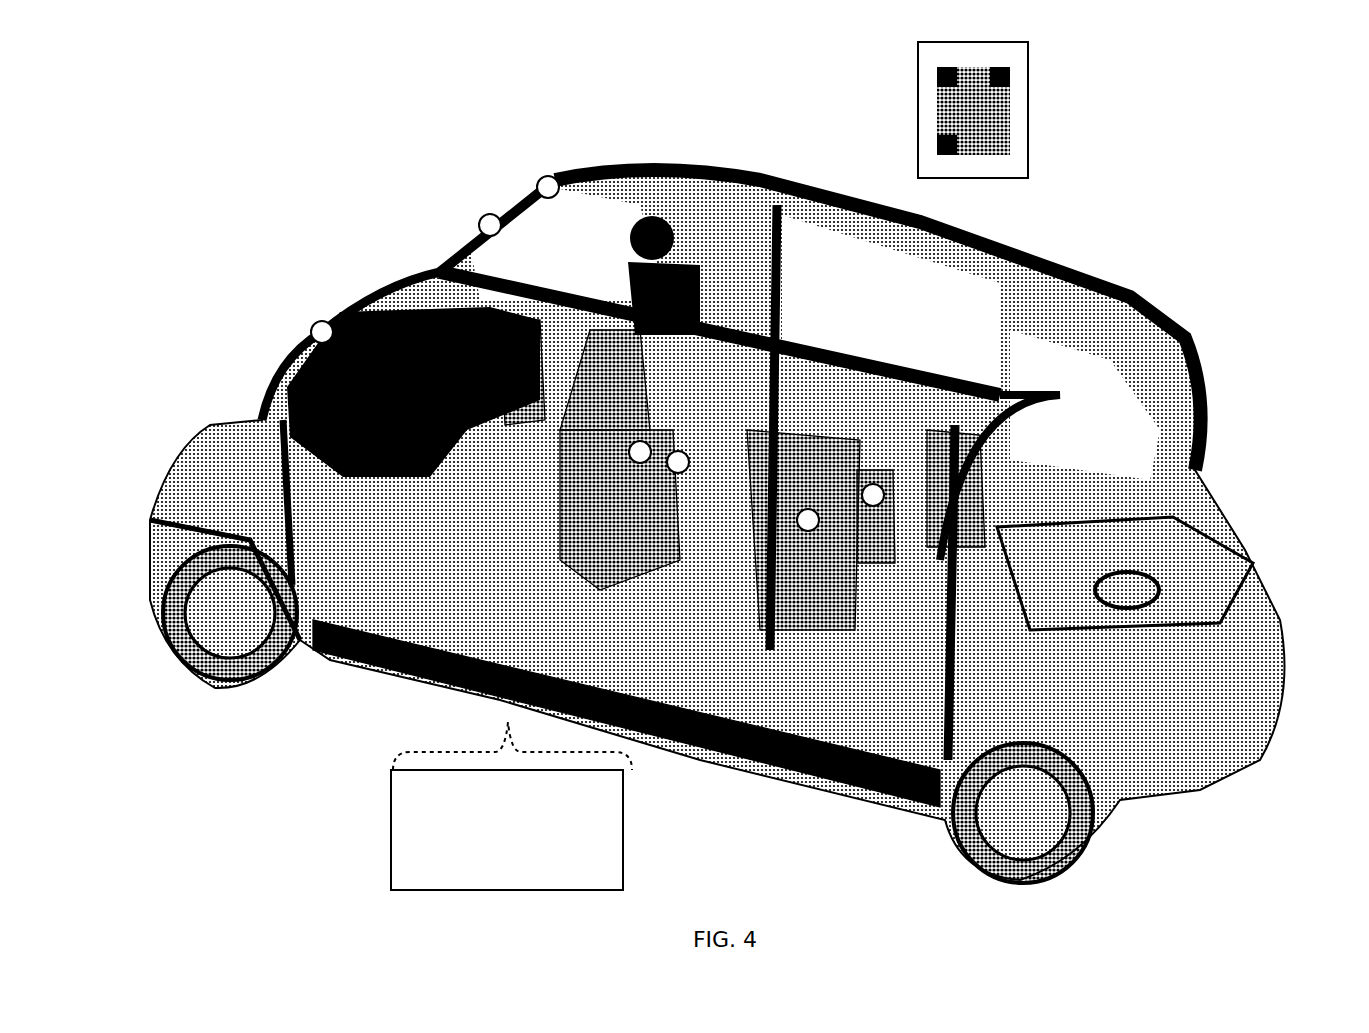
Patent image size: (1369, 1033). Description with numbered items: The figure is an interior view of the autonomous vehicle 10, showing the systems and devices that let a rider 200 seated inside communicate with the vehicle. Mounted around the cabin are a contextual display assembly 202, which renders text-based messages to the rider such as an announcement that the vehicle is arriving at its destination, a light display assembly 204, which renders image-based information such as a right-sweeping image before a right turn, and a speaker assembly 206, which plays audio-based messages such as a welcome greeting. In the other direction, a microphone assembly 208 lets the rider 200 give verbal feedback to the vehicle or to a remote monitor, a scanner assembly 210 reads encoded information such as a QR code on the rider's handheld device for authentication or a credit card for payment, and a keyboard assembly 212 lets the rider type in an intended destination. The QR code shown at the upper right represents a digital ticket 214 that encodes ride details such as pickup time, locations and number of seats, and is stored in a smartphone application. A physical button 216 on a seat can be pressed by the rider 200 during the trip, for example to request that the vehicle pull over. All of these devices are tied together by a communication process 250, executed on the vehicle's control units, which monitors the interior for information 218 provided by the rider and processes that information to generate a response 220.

The autonomous vehicle 10 is at (717, 526).
The rider 200 is at (680, 242).
The contextual display assembly 202 is at (485, 216).
The light display assembly 204 is at (556, 181).
The speaker assembly 206 is at (315, 325).
The microphone assembly 208 is at (1050, 272).
The scanner assembly 210 is at (438, 270).
The keyboard assembly 212 is at (1075, 292).
The digital ticket 214 is at (1033, 130).
The physical button 216 is at (810, 525).
The information 218 is at (710, 371).
The response 220 is at (413, 392).
The communication process 250 is at (511, 806).